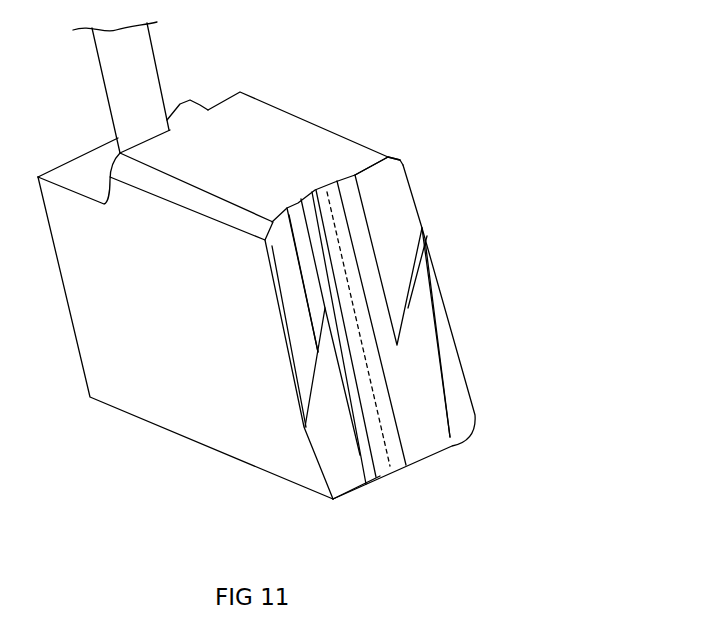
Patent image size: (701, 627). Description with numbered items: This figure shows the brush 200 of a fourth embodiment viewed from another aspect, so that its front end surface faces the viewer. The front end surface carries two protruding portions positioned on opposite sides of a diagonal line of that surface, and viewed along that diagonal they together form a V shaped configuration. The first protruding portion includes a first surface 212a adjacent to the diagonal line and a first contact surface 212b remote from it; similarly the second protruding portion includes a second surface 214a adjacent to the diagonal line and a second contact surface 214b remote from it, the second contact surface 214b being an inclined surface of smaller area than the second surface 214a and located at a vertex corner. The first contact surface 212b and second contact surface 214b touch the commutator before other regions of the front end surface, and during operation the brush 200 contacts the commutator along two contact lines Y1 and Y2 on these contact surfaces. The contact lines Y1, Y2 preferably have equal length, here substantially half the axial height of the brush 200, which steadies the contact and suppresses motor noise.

The brush 200 is at (520, 117).
The first surface 212a is at (397, 217).
The first contact surface 212b is at (432, 308).
The second surface 214a is at (335, 482).
The second contact surface 214b is at (297, 307).
The contact line Y1 is at (432, 372).
The contact line Y2 is at (297, 260).